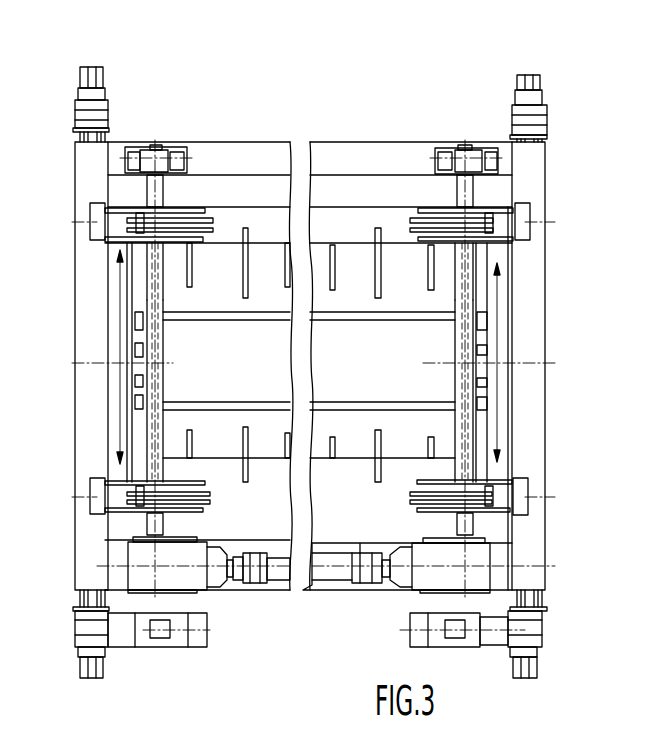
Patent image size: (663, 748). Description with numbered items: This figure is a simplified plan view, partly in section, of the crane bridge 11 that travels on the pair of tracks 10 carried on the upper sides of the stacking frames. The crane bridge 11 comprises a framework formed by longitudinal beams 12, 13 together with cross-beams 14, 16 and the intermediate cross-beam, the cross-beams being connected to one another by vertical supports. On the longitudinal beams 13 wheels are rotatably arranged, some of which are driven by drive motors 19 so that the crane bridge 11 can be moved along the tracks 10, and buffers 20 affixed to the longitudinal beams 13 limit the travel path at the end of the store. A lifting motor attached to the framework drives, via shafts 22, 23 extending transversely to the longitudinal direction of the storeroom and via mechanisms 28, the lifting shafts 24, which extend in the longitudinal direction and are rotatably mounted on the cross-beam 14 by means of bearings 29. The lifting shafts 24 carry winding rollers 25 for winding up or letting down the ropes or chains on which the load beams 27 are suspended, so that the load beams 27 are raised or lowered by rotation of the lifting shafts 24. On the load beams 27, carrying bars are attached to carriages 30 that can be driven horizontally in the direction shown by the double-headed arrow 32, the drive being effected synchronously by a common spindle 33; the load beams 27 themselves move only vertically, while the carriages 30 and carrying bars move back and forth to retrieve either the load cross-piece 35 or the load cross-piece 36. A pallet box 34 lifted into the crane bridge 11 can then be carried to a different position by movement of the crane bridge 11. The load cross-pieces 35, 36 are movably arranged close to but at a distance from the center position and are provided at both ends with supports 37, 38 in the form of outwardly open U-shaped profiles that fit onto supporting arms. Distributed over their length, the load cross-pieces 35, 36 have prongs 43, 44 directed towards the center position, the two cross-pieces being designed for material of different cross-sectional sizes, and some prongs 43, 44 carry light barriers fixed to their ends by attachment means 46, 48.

The track 10 is at (528, 74).
The crane bridge 11 is at (325, 68).
The longitudinal beam 12 is at (85, 292).
The longitudinal beam 13 is at (98, 92).
The cross-beam 14 is at (235, 155).
The cross-beam 16 is at (237, 585).
The drive motor 19 is at (178, 645).
The buffer 20 is at (82, 117).
The shaft 22 is at (282, 575).
The shaft 23 is at (335, 570).
The lifting shaft 24 is at (148, 187).
The winding roller 25 is at (210, 213).
The load beam 27 is at (115, 470).
The mechanism 28 is at (425, 582).
The bearing 29 is at (158, 153).
The carriage 30 is at (137, 348).
The double-headed arrow 32 is at (122, 417).
The spindle 33 is at (93, 363).
The pallet box 34 is at (392, 371).
The load cross-piece 35 is at (357, 217).
The load cross-piece 36 is at (342, 470).
The support 37 is at (152, 262).
The support 38 is at (152, 438).
The prong 43 is at (335, 260).
The prong 44 is at (200, 430).
The attachment means 46 is at (247, 218).
The attachment means 48 is at (242, 430).